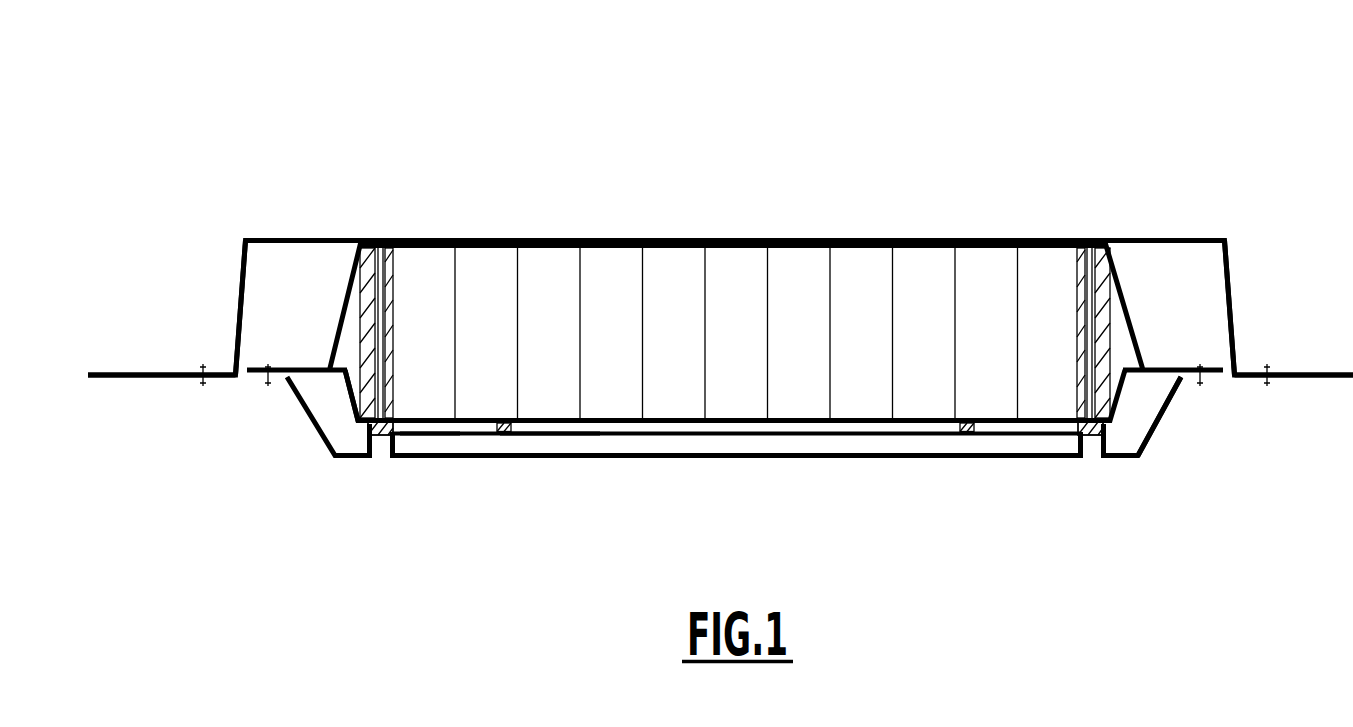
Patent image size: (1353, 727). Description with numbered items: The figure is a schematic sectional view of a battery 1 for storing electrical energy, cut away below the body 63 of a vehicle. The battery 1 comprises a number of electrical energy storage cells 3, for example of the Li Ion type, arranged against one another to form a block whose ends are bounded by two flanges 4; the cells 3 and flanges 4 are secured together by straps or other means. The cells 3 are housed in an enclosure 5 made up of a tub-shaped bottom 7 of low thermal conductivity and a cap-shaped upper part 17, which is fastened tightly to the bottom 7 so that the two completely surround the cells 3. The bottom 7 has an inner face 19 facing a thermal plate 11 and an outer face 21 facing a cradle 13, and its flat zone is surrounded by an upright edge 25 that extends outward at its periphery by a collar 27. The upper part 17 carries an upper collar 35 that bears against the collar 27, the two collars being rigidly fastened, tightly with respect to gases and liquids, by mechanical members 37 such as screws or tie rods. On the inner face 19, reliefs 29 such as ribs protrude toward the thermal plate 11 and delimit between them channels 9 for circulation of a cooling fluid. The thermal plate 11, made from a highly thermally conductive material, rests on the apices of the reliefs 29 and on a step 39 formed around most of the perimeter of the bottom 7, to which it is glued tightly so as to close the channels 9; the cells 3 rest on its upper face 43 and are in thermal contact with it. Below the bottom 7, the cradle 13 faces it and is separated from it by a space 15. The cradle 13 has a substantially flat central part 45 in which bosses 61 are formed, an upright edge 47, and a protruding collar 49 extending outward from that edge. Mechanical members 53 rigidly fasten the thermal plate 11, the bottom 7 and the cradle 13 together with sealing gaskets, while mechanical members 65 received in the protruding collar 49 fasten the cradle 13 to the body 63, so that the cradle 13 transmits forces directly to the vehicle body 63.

The battery 1 is at (152, 128).
The electrical energy storage cell 3 is at (730, 268).
The flanges 4 is at (343, 253).
The enclosure 5 is at (1152, 269).
The bottom 7 is at (543, 466).
The channel 9 is at (883, 454).
The thermal plate 11 is at (620, 447).
The cradle 13 is at (401, 487).
The space 15 is at (589, 437).
The upper part 17 is at (734, 217).
The inner face 19 is at (422, 437).
The outer face 21 is at (420, 461).
The upright edge 25 is at (347, 388).
The collar 27 is at (233, 368).
The reliefs 29 is at (500, 420).
The upper collar 35 is at (270, 367).
The mechanical members 37 is at (268, 378).
The step 39 is at (400, 417).
The upper face 43 is at (548, 415).
The central part 45 is at (745, 461).
The upright edge 47 is at (1158, 427).
The protruding collar 49 is at (1272, 373).
The mechanical members 53 is at (376, 438).
The bosses 61 is at (368, 430).
The body 63 is at (1233, 273).
The mechanical members 65 is at (203, 381).